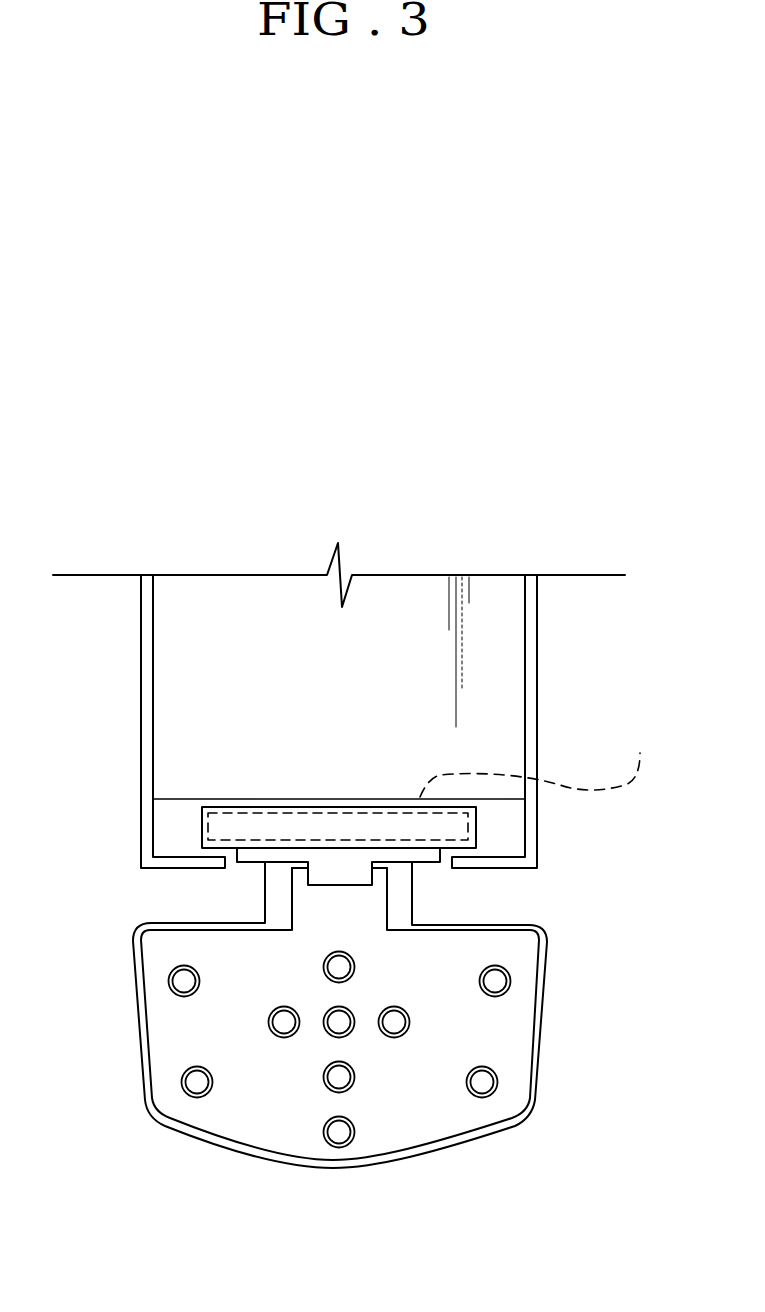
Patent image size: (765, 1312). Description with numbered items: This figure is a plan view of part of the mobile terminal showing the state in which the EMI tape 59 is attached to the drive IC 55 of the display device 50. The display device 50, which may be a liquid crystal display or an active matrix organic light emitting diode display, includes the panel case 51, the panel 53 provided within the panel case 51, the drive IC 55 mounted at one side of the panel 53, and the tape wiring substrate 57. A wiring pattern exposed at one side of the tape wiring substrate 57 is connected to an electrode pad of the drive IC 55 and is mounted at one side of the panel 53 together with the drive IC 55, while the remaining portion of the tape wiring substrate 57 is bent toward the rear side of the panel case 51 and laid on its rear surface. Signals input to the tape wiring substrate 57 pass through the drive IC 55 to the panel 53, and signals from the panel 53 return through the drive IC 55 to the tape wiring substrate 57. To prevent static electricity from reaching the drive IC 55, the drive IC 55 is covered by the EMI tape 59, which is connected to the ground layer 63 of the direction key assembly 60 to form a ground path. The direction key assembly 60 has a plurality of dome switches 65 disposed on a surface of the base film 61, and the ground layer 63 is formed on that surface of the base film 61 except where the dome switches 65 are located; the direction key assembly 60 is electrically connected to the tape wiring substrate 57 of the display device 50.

The display device 50 is at (545, 622).
The panel case 51 is at (147, 710).
The panel 53 is at (222, 592).
The drive IC 55 is at (542, 752).
The tape wiring substrate 57 is at (247, 858).
The EMI tape 59 is at (476, 825).
The direction key assembly 60 is at (553, 977).
The base film 61 is at (435, 1158).
The ground layer 63 is at (158, 1033).
The dome switches 65 is at (339, 1077).